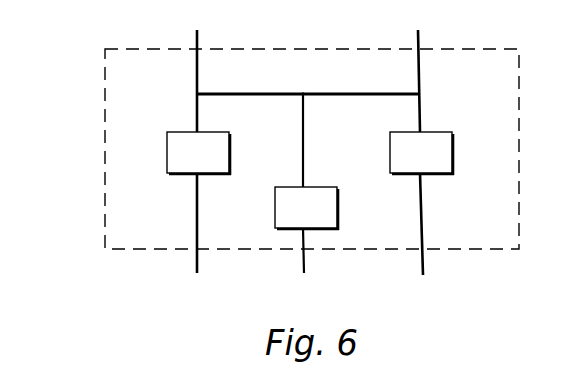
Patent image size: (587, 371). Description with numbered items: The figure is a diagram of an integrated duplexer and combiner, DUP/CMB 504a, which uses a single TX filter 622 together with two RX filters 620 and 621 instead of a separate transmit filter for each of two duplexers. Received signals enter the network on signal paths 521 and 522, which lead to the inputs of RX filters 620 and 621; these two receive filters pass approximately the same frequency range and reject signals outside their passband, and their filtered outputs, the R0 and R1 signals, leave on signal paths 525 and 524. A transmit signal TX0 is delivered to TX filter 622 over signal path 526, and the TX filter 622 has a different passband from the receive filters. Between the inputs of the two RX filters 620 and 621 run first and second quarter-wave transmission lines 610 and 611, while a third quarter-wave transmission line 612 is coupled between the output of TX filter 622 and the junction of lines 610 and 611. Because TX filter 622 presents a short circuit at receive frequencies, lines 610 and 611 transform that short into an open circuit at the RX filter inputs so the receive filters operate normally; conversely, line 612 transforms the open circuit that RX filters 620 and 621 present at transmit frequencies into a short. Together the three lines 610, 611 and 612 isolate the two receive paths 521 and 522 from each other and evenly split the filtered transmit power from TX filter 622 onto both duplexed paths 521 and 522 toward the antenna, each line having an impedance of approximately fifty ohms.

The integrated DUP/CMB 504a is at (106, 50).
The signal path 521 is at (196, 80).
The signal path 522 is at (419, 78).
The first λ/4 transmission line 610 is at (266, 93).
The second λ/4 transmission line 611 is at (371, 92).
The third λ/4 transmission line 612 is at (300, 158).
The RX filter 620 is at (168, 152).
The RX filter 621 is at (454, 157).
The TX filter 622 is at (276, 205).
The signal path 524 is at (425, 267).
The signal path 525 is at (198, 263).
The signal path 526 is at (305, 268).